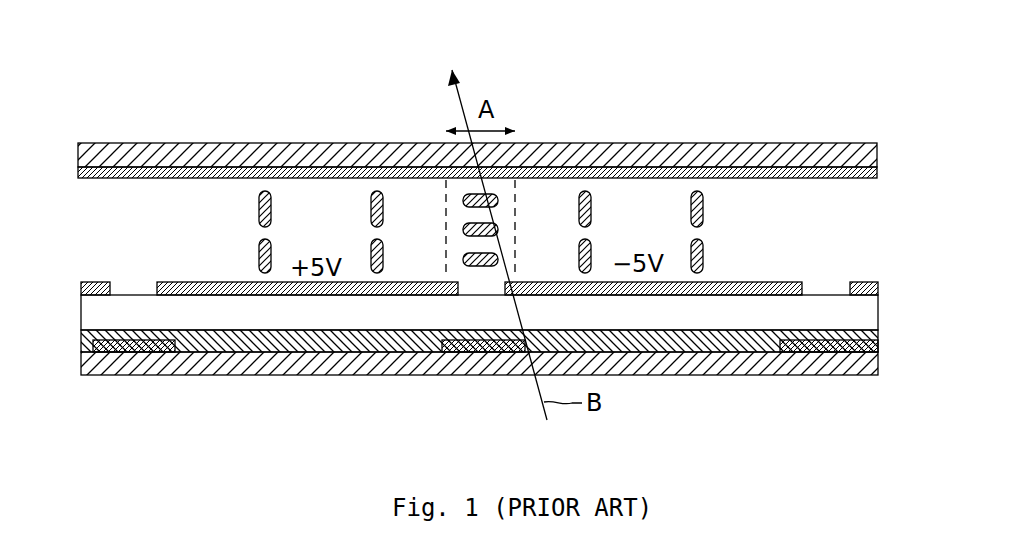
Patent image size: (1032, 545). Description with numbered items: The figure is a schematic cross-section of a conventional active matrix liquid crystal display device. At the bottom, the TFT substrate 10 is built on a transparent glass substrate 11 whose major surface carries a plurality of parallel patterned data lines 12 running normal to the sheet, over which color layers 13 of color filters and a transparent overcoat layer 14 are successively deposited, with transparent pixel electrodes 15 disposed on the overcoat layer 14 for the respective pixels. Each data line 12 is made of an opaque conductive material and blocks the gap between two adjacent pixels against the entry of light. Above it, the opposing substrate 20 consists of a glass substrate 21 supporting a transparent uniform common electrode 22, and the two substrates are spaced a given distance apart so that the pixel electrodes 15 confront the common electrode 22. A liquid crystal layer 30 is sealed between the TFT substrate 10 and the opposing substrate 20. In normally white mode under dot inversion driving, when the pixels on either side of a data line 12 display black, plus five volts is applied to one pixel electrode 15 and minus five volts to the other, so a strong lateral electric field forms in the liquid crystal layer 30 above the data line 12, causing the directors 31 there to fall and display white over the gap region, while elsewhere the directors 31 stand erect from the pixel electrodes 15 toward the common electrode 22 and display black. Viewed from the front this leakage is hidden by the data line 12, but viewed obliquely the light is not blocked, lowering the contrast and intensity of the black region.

The TFT substrate 10 is at (468, 352).
The transparent glass substrate 11 is at (254, 376).
The data lines 12 is at (478, 346).
The color layers 13 is at (338, 345).
The transparent overcoat layer 14 is at (686, 310).
The transparent pixel electrodes 15 is at (163, 284).
The opposing substrate 20 is at (466, 125).
The glass substrate 21 is at (674, 157).
The transparent uniform common electrode 22 is at (229, 172).
The liquid crystal layer 30 is at (479, 229).
The directors 31 is at (258, 254).